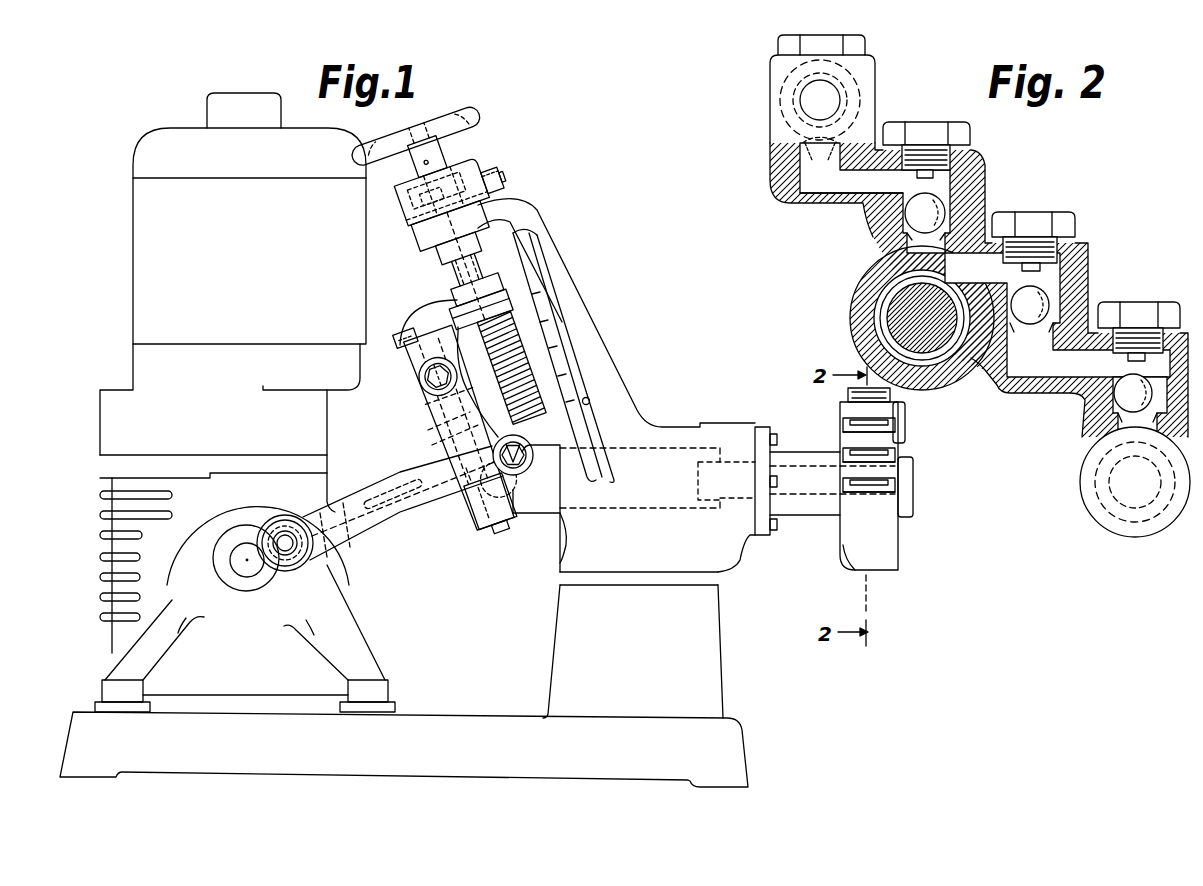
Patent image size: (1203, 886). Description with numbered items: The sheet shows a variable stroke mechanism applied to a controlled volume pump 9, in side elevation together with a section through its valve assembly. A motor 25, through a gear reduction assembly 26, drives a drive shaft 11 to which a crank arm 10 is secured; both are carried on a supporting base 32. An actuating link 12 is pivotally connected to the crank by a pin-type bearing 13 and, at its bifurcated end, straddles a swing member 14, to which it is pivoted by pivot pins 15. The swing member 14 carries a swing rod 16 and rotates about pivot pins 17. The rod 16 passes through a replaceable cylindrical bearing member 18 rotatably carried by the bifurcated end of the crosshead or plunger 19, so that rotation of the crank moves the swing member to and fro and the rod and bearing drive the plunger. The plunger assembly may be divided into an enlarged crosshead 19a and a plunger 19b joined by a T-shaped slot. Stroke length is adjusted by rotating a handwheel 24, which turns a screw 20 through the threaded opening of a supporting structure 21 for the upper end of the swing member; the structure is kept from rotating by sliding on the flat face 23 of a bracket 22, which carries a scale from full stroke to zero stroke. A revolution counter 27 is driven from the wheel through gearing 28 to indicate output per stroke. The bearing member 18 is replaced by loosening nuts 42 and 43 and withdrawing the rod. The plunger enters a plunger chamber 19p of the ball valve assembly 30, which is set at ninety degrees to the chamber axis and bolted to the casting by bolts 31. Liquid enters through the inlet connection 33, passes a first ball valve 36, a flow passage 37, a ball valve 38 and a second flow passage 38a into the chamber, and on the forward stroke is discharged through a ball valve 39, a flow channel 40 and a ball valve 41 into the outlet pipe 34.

In FIG. 1, the controlled volume pump 9 is at (666, 374).
In FIG. 1, the crank arm 10 is at (279, 586).
In FIG. 1, the drive shaft 11 is at (243, 567).
In FIG. 1, the actuating link 12 is at (410, 512).
In FIG. 1, the pin-type bearing 13 is at (298, 548).
In FIG. 1, the swing member 14 is at (437, 437).
In FIG. 1, the pivot pins 15 is at (504, 440).
In FIG. 1, the swing rod 16 is at (428, 437).
In FIG. 1, the pivot pins 17 is at (410, 381).
In FIG. 1, the cylindrical bearing member 18 is at (475, 499).
In FIG. 1, the plunger 19 is at (545, 520).
In FIG. 1, the crosshead 19a is at (665, 450).
In FIG. 1, the plunger 19b is at (736, 462).
In FIG. 2, the plunger 19b is at (896, 313).
In FIG. 2, the plunger chamber 19p is at (893, 277).
In FIG. 1, the screw 20 is at (494, 374).
In FIG. 1, the supporting structure 21 is at (445, 334).
In FIG. 1, the bracket 22 is at (545, 238).
In FIG. 1, the flat face 23 is at (532, 370).
In FIG. 1, the handwheel 24 is at (429, 129).
In FIG. 1, the motor 25 is at (135, 252).
In FIG. 1, the gear reduction assembly 26 is at (113, 530).
In FIG. 1, the revolution counter 27 is at (521, 167).
In FIG. 1, the gearing 28 is at (457, 170).
In FIG. 1, the ball valve assembly 30 is at (850, 540).
In FIG. 2, the ball valve assembly 30 is at (1095, 163).
In FIG. 1, the bolts 31 is at (778, 440).
In FIG. 1, the supporting base 32 is at (708, 645).
In FIG. 2, the inlet connection 33 is at (1130, 495).
In FIG. 2, the outlet pipe 34 is at (832, 92).
In FIG. 2, the first ball valve 36 is at (1130, 402).
In FIG. 2, the flow passage 37 is at (1030, 363).
In FIG. 1, the ball valve 38 is at (440, 727).
In FIG. 2, the ball valve 38 is at (1056, 287).
In FIG. 2, the second flow passage 38a is at (987, 253).
In FIG. 2, the ball valve 39 is at (963, 173).
In FIG. 2, the flow channel 40 is at (838, 185).
In FIG. 2, the ball valve 41 is at (800, 152).
In FIG. 1, the nut 42 is at (393, 325).
In FIG. 1, the nut 43 is at (491, 544).